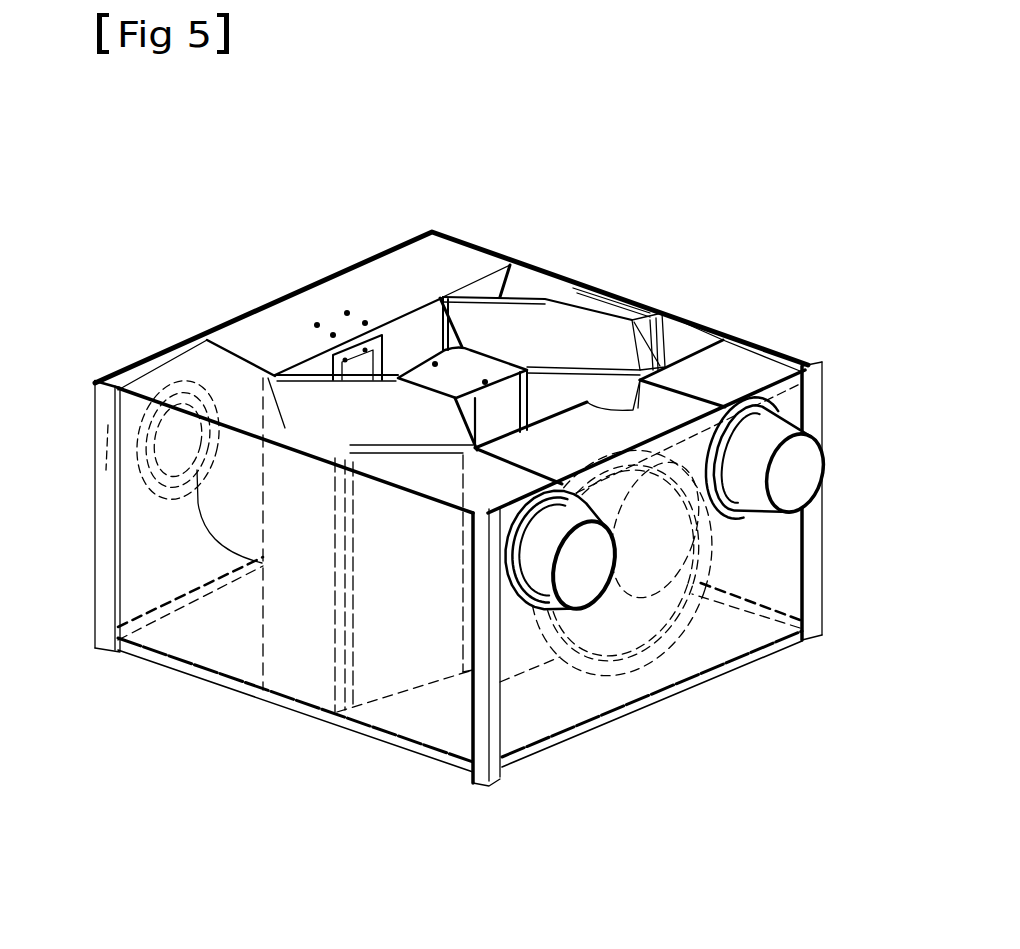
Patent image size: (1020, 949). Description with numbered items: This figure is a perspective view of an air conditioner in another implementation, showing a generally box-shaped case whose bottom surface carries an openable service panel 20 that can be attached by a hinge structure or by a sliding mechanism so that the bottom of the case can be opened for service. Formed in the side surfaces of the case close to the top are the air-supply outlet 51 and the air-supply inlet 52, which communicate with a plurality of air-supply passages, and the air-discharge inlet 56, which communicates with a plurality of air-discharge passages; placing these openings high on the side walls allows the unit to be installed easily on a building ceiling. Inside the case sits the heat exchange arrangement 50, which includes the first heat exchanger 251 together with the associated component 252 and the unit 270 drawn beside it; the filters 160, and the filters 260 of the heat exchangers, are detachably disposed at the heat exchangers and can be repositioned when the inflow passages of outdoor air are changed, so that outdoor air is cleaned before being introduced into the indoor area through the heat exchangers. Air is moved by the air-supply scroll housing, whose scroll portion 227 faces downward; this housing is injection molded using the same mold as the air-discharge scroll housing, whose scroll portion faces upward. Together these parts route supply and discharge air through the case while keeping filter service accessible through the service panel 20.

The service panel 20 is at (720, 632).
The heat exchange unit 50 is at (693, 340).
The air-supply outlet 51 is at (800, 467).
The air-supply inlet 52 is at (115, 418).
The air-discharge inlet 56 is at (695, 742).
The filters 160 is at (435, 470).
The scroll portion 227 is at (683, 403).
The first heat exchanger 251 is at (552, 322).
The filter block 252 is at (313, 397).
The filters 260 is at (670, 312).
The control box 270 is at (455, 375).